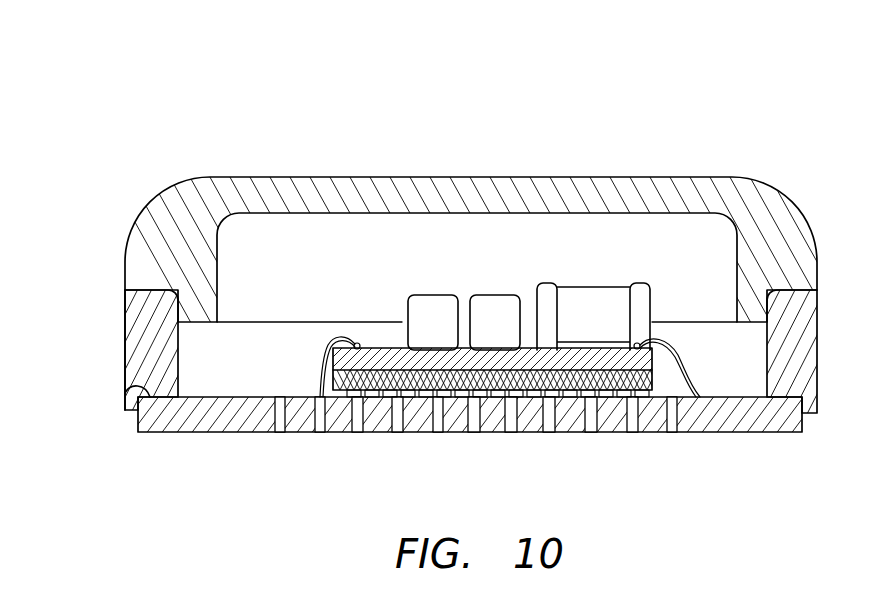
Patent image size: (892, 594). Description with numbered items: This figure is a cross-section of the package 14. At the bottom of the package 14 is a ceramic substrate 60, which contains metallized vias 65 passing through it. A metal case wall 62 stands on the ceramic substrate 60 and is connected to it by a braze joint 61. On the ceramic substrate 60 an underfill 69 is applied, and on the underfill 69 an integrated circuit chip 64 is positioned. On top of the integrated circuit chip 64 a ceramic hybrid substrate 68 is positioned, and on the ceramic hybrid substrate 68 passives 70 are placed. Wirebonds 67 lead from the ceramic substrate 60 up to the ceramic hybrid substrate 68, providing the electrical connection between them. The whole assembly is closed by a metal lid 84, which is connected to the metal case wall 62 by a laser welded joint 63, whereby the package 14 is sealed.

The package 14 is at (222, 127).
The metal lid 84 is at (128, 241).
The laser welded joint 63 is at (123, 291).
The metal case wall 62 is at (123, 343).
The braze joint 61 is at (125, 393).
The ceramic substrate 60 is at (155, 432).
The integrated circuit chip 64 is at (330, 377).
The underfill 69 is at (305, 398).
The metallized vias 65 is at (463, 414).
The ceramic hybrid substrate 68 is at (397, 350).
The passives 70 is at (592, 283).
The wirebonds 67 is at (673, 345).